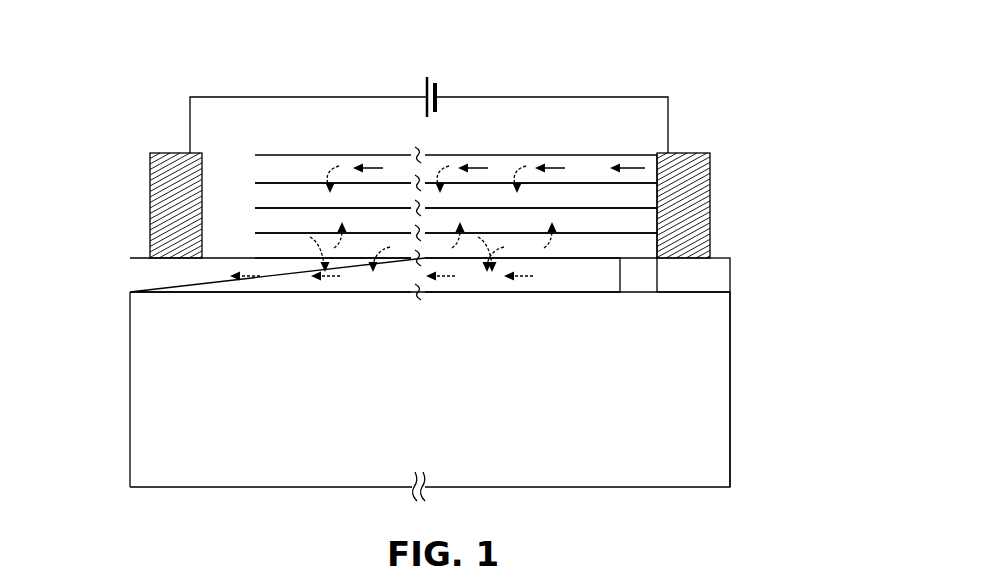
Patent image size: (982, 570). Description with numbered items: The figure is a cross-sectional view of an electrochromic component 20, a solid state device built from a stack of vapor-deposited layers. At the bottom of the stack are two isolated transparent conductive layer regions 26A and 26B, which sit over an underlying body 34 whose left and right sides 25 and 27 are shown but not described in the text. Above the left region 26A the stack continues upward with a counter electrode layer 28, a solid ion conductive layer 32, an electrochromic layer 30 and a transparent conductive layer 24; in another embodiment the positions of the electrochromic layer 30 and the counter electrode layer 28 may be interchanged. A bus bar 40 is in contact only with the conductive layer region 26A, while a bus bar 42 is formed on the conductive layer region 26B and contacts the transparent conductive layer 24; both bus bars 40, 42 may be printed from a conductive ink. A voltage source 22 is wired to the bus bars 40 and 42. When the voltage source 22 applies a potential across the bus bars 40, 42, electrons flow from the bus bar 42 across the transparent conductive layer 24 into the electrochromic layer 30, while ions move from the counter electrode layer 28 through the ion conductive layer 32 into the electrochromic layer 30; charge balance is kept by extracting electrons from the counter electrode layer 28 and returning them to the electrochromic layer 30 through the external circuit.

The electrochromic component 20 is at (776, 66).
The voltage source 22 is at (279, 82).
The transparent conductive layer 24 is at (601, 157).
The first side of substrate 25 is at (130, 362).
The transparent conductive layer region 26A is at (132, 277).
The transparent conductive layer region 26B is at (722, 276).
The second side of substrate 27 is at (730, 366).
The counter electrode layer 28 is at (256, 250).
The electrochromic layer 30 is at (256, 196).
The ion conductive layer 32 is at (256, 224).
The substrate 34 is at (446, 393).
The bus bar 40 is at (150, 225).
The bus bar 42 is at (710, 206).